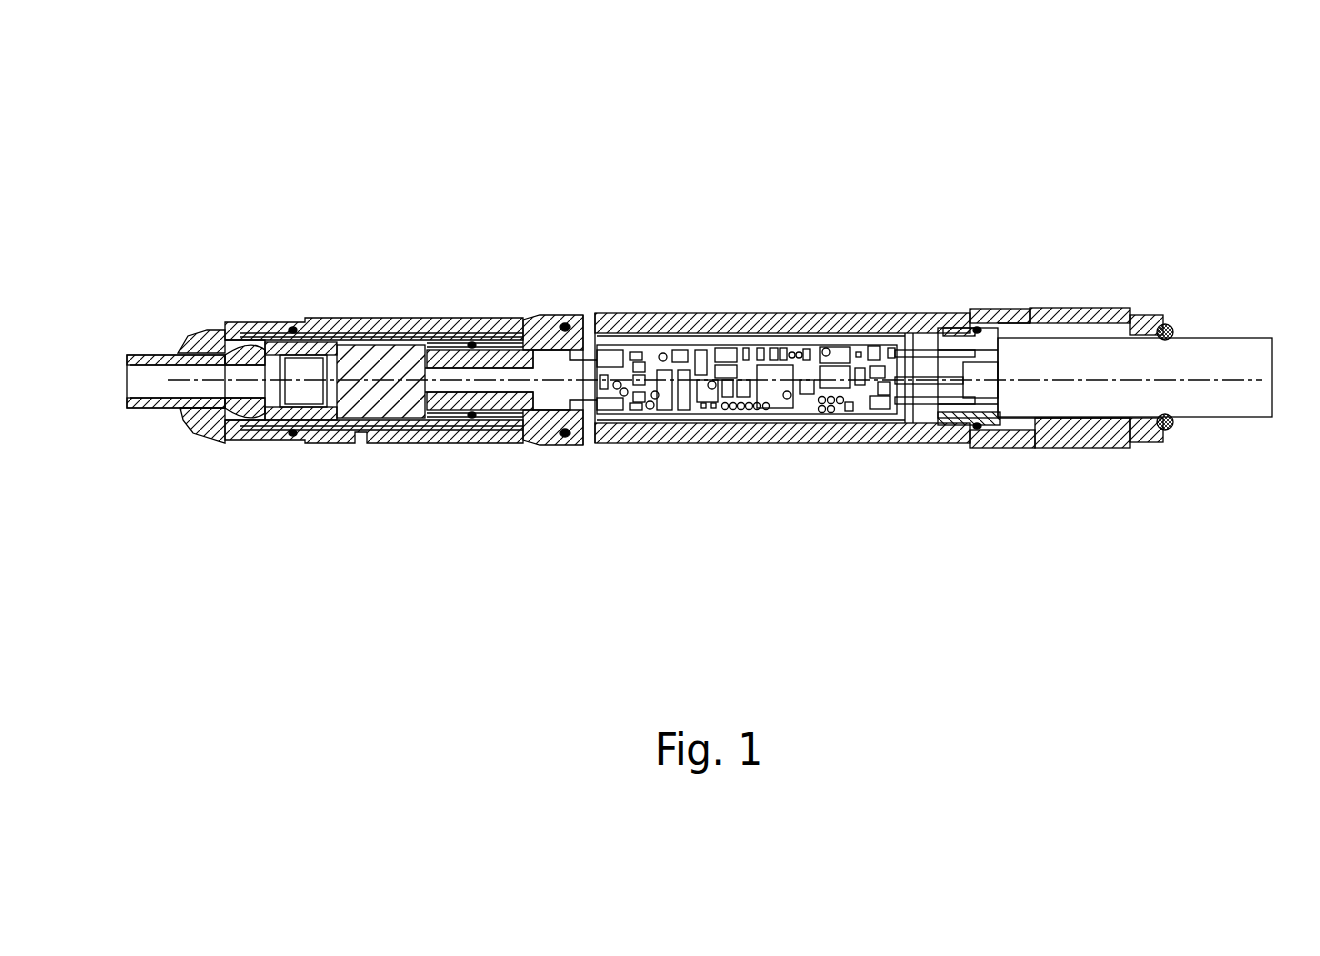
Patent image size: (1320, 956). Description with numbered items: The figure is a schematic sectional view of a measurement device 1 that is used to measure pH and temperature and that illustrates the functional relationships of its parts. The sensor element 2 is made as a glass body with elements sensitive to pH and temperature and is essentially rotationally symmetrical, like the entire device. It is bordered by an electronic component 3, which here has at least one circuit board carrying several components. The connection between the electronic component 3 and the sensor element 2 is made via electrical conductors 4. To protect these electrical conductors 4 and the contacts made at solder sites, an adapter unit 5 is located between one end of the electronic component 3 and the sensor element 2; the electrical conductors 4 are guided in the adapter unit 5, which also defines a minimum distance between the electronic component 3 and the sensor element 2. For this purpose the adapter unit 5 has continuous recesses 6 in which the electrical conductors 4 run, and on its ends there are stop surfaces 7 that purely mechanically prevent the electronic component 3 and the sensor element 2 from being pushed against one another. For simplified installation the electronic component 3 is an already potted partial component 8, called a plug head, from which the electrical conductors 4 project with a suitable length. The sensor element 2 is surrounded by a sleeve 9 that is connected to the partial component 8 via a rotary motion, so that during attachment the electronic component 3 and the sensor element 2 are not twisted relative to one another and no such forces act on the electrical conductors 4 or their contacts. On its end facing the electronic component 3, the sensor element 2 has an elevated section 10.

The measurement device 1 is at (955, 190).
The sensor element 2 is at (1228, 403).
The electronic component 3 is at (722, 352).
The electrical conductors 4 is at (938, 355).
The adapter unit 5 is at (997, 428).
The continuous recesses 6 is at (936, 348).
The stop surfaces 7 is at (990, 407).
The potted partial component 8 is at (752, 416).
The sleeve 9 is at (1117, 313).
The elevated section 10 is at (1000, 367).